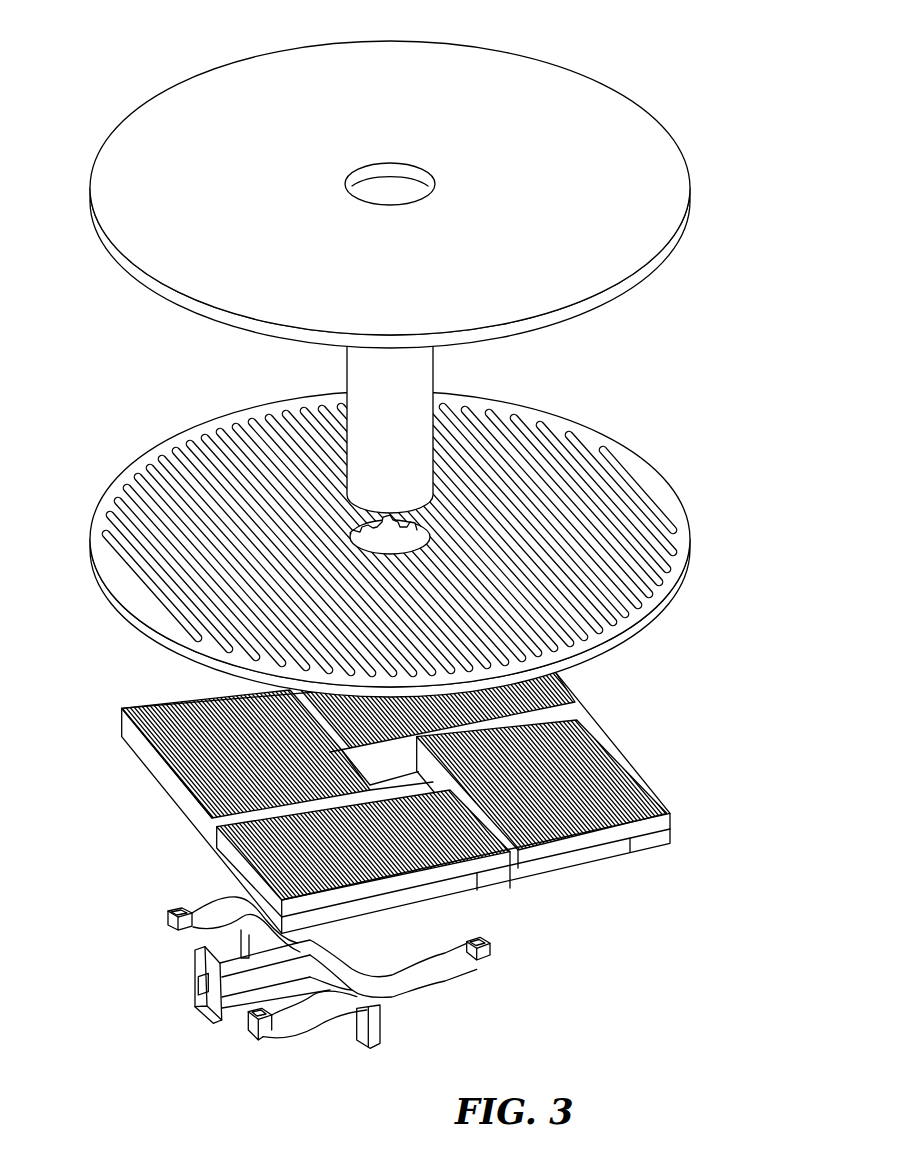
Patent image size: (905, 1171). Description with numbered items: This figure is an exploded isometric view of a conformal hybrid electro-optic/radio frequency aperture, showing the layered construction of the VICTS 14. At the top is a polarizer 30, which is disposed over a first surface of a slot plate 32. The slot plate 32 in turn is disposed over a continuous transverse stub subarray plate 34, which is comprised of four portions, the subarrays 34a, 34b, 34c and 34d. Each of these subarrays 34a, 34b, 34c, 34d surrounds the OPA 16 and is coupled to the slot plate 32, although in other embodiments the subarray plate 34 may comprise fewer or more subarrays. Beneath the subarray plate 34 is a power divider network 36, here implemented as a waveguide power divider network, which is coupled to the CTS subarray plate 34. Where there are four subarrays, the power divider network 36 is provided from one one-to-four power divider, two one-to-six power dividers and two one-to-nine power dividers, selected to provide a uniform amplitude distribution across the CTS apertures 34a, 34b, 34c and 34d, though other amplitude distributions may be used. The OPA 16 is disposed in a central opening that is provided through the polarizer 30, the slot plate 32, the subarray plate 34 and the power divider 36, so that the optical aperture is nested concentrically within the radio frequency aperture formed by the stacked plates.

The VICTS 14 is at (452, 528).
The polarizer 30 is at (114, 98).
The OPA 16 is at (402, 398).
The slot plate 32 is at (151, 422).
The CTS subarray plate 34 is at (452, 791).
The subarray 34a is at (200, 730).
The subarray 34b is at (280, 838).
The subarray 34c is at (587, 767).
The subarray 34d is at (527, 692).
The power divider network 36 is at (150, 927).